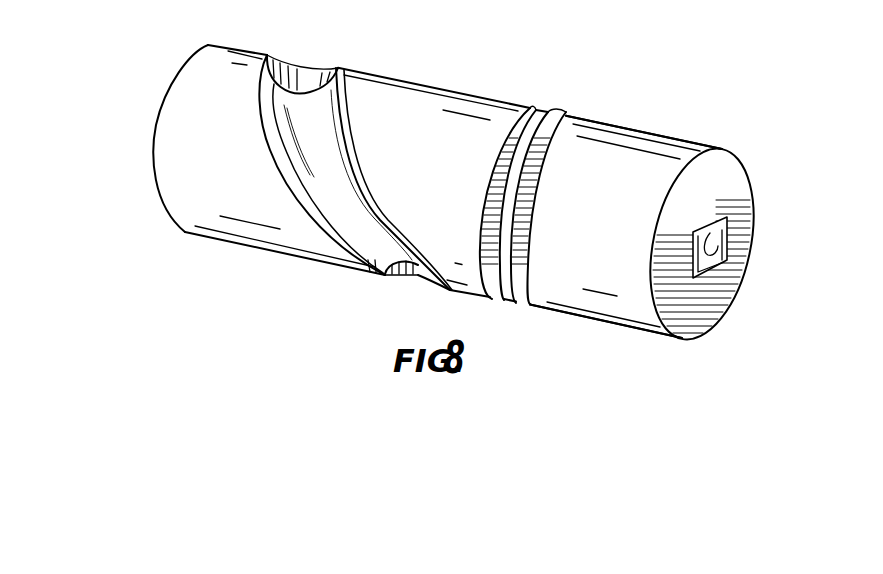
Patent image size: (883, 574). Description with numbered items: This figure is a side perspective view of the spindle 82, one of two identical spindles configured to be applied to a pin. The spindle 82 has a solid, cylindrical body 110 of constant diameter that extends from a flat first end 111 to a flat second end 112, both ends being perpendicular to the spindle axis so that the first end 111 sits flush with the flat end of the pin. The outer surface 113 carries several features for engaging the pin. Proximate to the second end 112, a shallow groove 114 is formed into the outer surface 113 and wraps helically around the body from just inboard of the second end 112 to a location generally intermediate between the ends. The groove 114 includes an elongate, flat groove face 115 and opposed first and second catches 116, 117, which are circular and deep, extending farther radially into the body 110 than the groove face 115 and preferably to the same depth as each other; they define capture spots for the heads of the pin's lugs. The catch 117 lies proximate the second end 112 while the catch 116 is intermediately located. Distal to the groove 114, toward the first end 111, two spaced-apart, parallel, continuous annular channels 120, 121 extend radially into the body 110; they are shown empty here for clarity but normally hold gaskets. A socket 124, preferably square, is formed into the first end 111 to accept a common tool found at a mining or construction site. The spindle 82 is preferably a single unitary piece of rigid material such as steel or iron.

The spindle 82 is at (237, 255).
The body 110 is at (588, 302).
The first end 111 is at (713, 309).
The second end 112 is at (153, 190).
The outer surface 113 is at (633, 204).
The groove 114 is at (322, 235).
The groove face 115 is at (347, 191).
The first catch 116 is at (399, 278).
The second catch 117 is at (319, 71).
The annular channel 120 is at (562, 128).
The annular channel 121 is at (533, 125).
The socket 124 is at (712, 247).